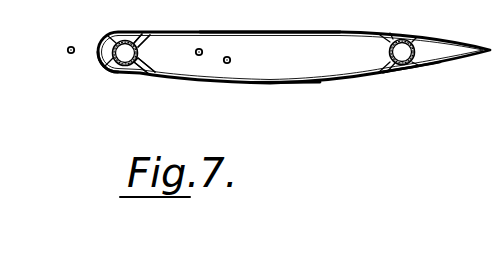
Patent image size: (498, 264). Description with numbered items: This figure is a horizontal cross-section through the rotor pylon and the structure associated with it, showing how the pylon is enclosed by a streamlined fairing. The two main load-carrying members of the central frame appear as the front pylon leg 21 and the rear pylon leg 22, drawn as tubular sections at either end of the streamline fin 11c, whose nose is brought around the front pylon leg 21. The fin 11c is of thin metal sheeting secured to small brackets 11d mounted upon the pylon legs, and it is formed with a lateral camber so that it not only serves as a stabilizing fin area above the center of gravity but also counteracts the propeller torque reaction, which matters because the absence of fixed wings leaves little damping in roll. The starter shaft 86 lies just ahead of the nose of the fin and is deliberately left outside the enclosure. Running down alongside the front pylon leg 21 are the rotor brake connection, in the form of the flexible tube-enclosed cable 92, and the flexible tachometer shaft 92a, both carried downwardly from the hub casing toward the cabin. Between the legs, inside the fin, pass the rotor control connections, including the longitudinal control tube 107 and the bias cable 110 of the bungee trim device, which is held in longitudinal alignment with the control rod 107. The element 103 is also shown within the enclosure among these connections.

The streamline fin 11c is at (253, 12).
The brackets 11d is at (137, 74).
The front pylon leg 21 is at (126, 41).
The rear pylon leg 22 is at (406, 37).
The starter shaft 86 is at (68, 53).
The flexible tube-enclosed cable 92 is at (137, 50).
The flexible tachometer shaft 92a is at (139, 60).
The aperture 103 is at (230, 62).
The control tube 107 is at (202, 49).
The cable 110 is at (328, 58).